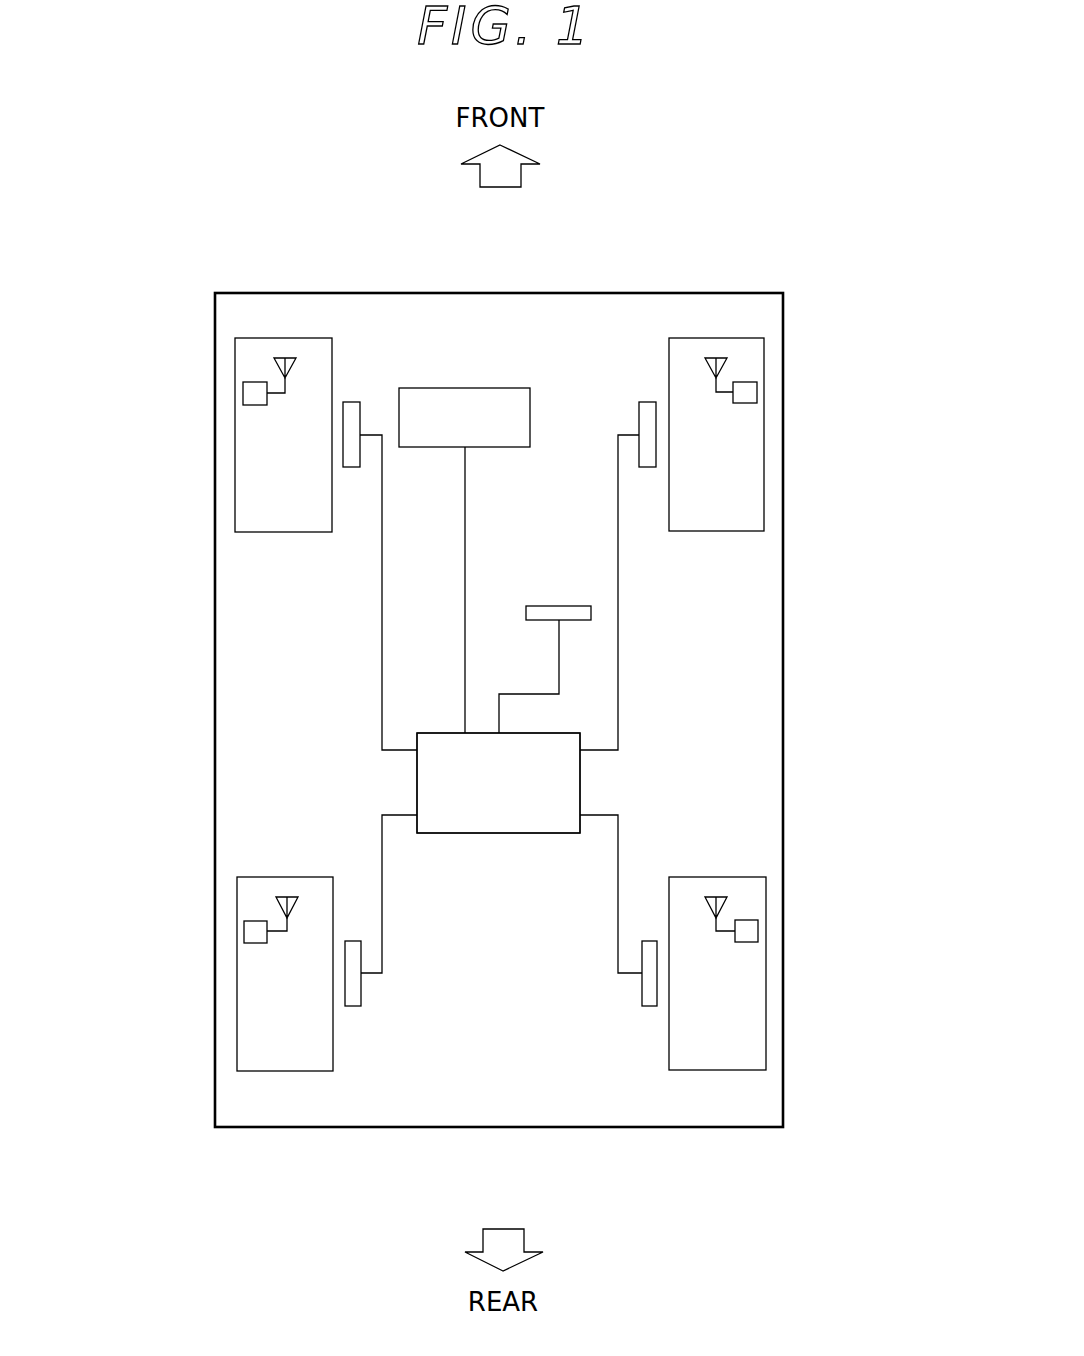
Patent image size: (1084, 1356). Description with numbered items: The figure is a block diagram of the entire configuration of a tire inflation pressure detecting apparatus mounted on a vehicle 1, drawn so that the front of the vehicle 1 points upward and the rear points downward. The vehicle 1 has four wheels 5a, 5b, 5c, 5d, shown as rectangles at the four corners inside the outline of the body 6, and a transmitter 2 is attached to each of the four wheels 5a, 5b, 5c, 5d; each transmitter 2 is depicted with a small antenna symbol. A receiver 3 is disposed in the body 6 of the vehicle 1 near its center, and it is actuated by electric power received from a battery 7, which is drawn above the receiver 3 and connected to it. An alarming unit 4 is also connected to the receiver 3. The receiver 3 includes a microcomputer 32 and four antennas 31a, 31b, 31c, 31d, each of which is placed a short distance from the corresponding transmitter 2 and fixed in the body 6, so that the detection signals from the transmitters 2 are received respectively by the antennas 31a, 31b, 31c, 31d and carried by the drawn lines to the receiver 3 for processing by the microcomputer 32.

The vehicle 1 is at (784, 627).
The transmitter 2 is at (243, 391).
The receiver 3 is at (463, 833).
The alarming unit 4 is at (572, 607).
The wheel 5a is at (752, 483).
The wheel 5b is at (247, 483).
The wheel 5c is at (755, 1025).
The wheel 5d is at (248, 1025).
The body 6 is at (770, 573).
The battery 7 is at (500, 388).
The antenna 31a is at (647, 408).
The antenna 31b is at (352, 408).
The antenna 31c is at (648, 1000).
The antenna 31d is at (353, 1000).
The microcomputer 32 is at (545, 834).